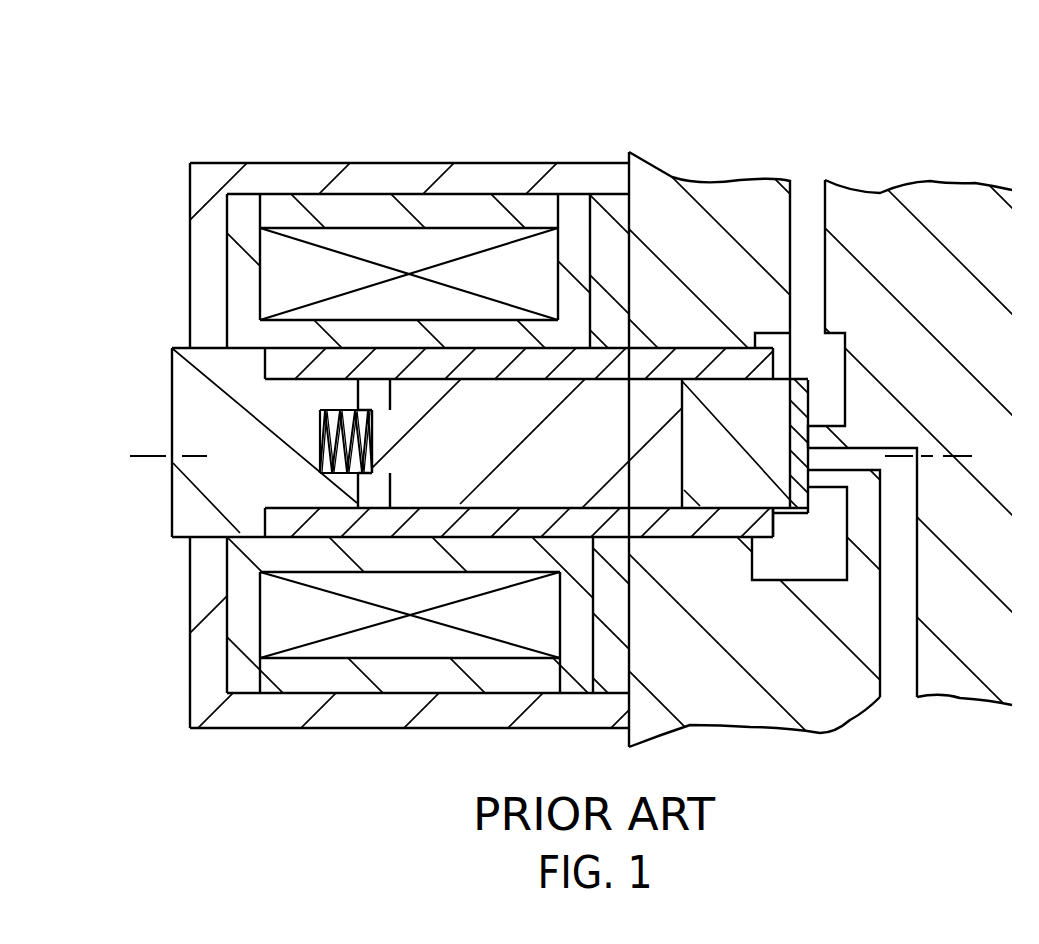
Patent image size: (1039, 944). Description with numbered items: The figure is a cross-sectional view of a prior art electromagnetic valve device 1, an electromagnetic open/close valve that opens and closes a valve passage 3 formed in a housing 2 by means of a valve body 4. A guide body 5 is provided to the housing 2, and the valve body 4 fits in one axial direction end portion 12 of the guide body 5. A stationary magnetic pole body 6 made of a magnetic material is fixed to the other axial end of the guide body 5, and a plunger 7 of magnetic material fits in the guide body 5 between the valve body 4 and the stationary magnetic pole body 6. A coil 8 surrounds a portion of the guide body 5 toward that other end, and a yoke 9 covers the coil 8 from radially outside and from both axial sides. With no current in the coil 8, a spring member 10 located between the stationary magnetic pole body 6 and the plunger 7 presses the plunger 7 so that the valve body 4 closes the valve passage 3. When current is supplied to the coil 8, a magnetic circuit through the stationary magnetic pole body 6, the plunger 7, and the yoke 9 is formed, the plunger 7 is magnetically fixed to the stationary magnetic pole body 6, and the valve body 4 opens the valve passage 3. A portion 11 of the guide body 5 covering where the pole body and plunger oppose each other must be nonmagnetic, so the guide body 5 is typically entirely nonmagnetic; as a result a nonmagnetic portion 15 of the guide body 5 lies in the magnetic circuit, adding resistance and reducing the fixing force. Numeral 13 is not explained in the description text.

The electromagnetic valve device 1 is at (638, 114).
The housing 2 is at (929, 198).
The valve passage 3 is at (812, 258).
The valve body 4 is at (793, 383).
The guide body 5 is at (513, 380).
The stationary magnetic pole body 6 is at (172, 413).
The plunger 7 is at (517, 497).
The coil 8 is at (421, 247).
The yoke 9 is at (517, 183).
The spring member 10 is at (320, 436).
The portion of the guide body 11 is at (386, 358).
The one axial direction end portion 12 is at (740, 347).
The bobbin 13 is at (340, 352).
The portion of the guide body 15 is at (630, 332).